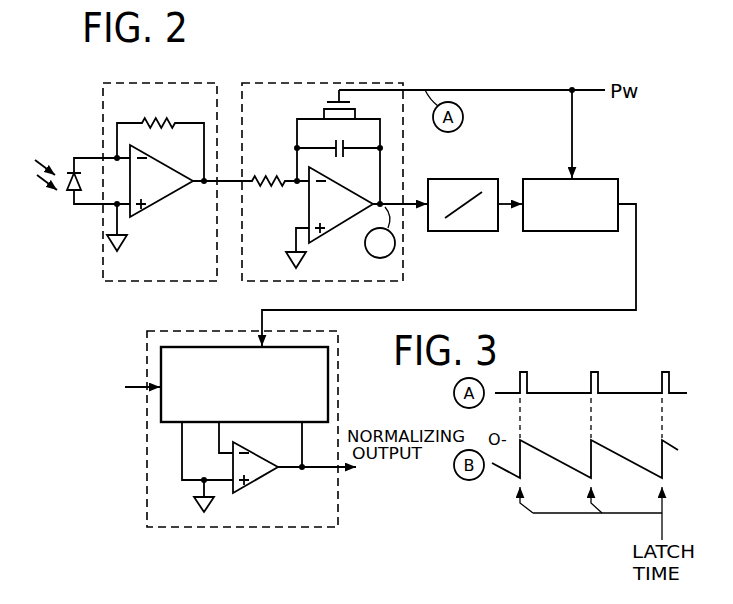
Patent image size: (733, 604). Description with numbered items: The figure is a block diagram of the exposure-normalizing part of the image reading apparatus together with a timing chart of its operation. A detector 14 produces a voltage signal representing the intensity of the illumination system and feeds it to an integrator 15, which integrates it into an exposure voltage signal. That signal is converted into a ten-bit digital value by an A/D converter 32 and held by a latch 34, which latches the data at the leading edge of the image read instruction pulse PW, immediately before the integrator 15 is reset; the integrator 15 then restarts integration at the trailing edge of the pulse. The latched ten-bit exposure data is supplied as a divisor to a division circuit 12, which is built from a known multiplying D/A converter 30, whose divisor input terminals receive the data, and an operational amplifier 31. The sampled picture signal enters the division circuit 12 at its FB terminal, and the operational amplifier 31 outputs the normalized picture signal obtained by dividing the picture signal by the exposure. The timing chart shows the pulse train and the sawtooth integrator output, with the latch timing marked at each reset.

The division circuit 12 is at (145, 467).
The detector 14 is at (102, 103).
The integrator 15 is at (405, 82).
The multiplying D/A converter 30 is at (161, 365).
The operational amplifier 31 is at (258, 473).
The A/D converter 32 is at (462, 231).
The latch 34 is at (567, 231).